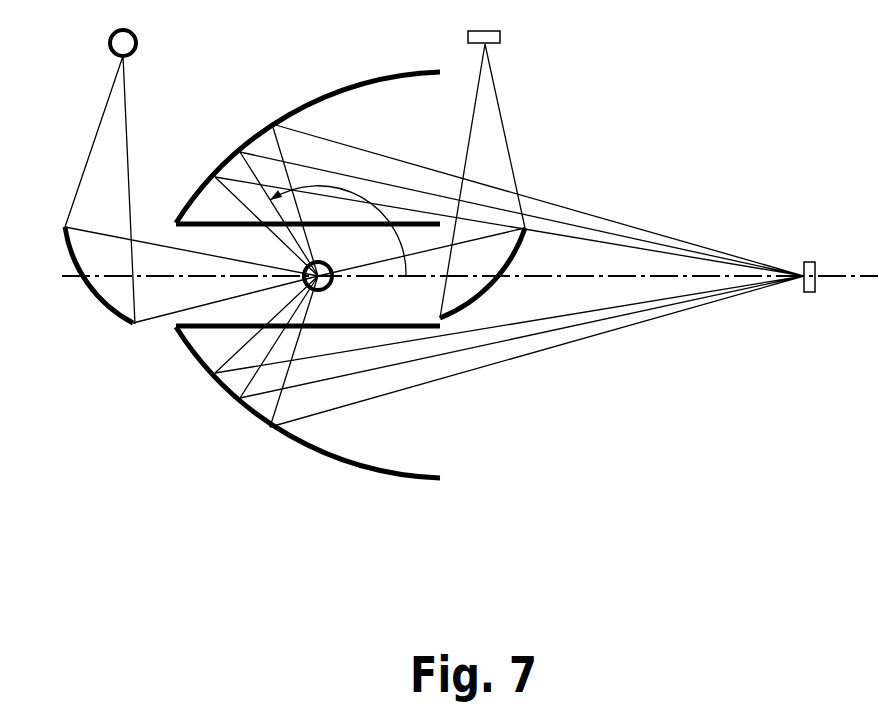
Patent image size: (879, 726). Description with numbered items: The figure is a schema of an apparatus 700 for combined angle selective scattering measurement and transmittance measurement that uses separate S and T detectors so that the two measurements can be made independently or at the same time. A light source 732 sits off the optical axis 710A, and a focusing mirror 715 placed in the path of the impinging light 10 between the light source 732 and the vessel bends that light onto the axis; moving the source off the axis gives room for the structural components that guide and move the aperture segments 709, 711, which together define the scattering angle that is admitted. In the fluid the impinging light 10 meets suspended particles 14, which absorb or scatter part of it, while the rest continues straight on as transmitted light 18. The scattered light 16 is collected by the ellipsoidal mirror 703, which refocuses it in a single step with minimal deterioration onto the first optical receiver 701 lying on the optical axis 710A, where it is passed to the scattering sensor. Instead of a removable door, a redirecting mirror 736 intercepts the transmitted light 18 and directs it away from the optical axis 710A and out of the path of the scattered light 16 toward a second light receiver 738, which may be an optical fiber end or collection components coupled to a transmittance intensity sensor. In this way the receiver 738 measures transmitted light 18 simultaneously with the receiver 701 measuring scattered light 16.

The apparatus 700 is at (668, 464).
The first optical receiver 701 is at (802, 293).
The ellipsoidal mirror 703 is at (378, 476).
The aperture segment 709 is at (222, 222).
The aperture segment 711 is at (343, 222).
The optical axis 710A is at (165, 280).
The focusing mirror 715 is at (122, 321).
The light source 732 is at (140, 42).
The impinging light 10 is at (128, 128).
The particles 14 is at (285, 340).
The scattered light 16 is at (314, 290).
The transmitted light 18 is at (513, 154).
The redirecting mirror 736 is at (533, 238).
The second light receiver 738 is at (503, 46).